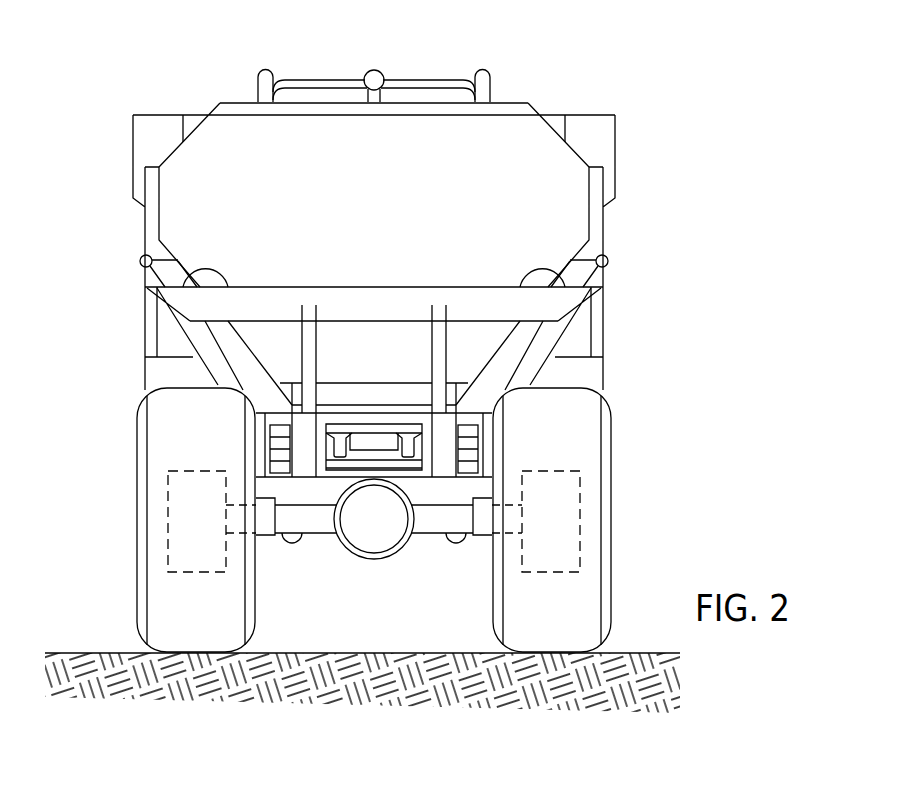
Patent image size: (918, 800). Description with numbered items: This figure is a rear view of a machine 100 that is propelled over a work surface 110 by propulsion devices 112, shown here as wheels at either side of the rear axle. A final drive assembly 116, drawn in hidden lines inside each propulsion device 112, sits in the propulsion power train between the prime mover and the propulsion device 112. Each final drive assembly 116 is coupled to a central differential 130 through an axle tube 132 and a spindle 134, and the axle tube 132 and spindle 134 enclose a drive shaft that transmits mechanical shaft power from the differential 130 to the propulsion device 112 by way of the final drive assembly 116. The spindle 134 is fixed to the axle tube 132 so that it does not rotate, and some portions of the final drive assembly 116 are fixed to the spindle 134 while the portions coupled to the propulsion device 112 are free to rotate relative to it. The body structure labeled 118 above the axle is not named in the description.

The machine 100 is at (383, 340).
The work surface 110 is at (83, 653).
The propulsion device 112 is at (137, 433).
The final drive assembly 116 is at (168, 507).
The tank body 118 is at (615, 155).
The differential 130 is at (374, 560).
The axle tube 132 is at (318, 539).
The spindle 134 is at (232, 537).